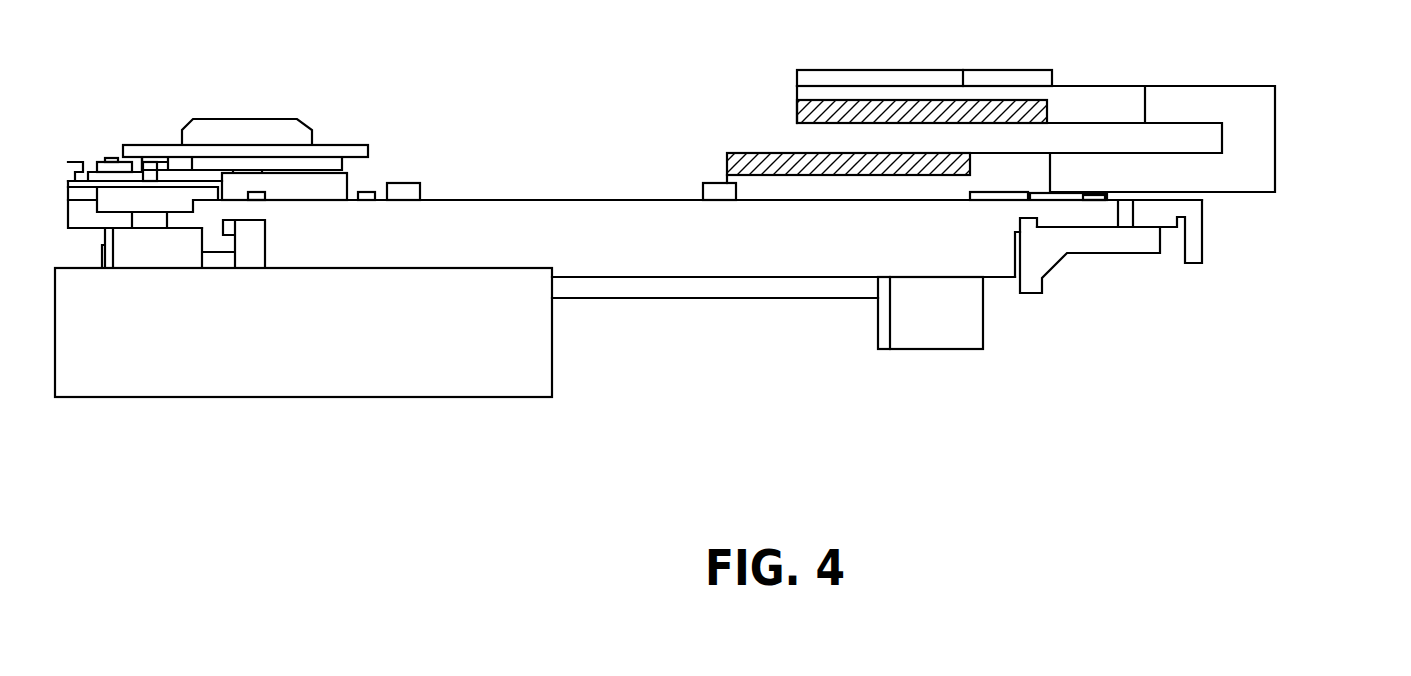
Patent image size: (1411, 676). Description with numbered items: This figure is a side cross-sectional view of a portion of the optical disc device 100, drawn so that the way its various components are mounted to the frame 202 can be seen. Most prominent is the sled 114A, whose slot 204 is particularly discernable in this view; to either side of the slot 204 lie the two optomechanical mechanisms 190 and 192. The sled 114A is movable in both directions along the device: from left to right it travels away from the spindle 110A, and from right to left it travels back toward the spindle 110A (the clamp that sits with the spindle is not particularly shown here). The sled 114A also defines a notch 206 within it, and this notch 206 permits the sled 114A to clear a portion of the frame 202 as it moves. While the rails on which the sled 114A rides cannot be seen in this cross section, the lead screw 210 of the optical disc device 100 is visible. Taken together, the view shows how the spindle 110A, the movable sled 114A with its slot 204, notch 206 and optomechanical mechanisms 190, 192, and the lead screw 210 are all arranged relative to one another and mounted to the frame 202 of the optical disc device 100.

The optical disc device 100 is at (355, 430).
The frame 202 is at (507, 222).
The spindle 110A is at (323, 160).
The optomechanical mechanism 192 is at (793, 112).
The slot 204 is at (748, 131).
The optomechanical mechanism 190 is at (727, 163).
The sled 114A is at (1260, 145).
The notch 206 is at (1213, 197).
The lead screw 210 is at (923, 333).